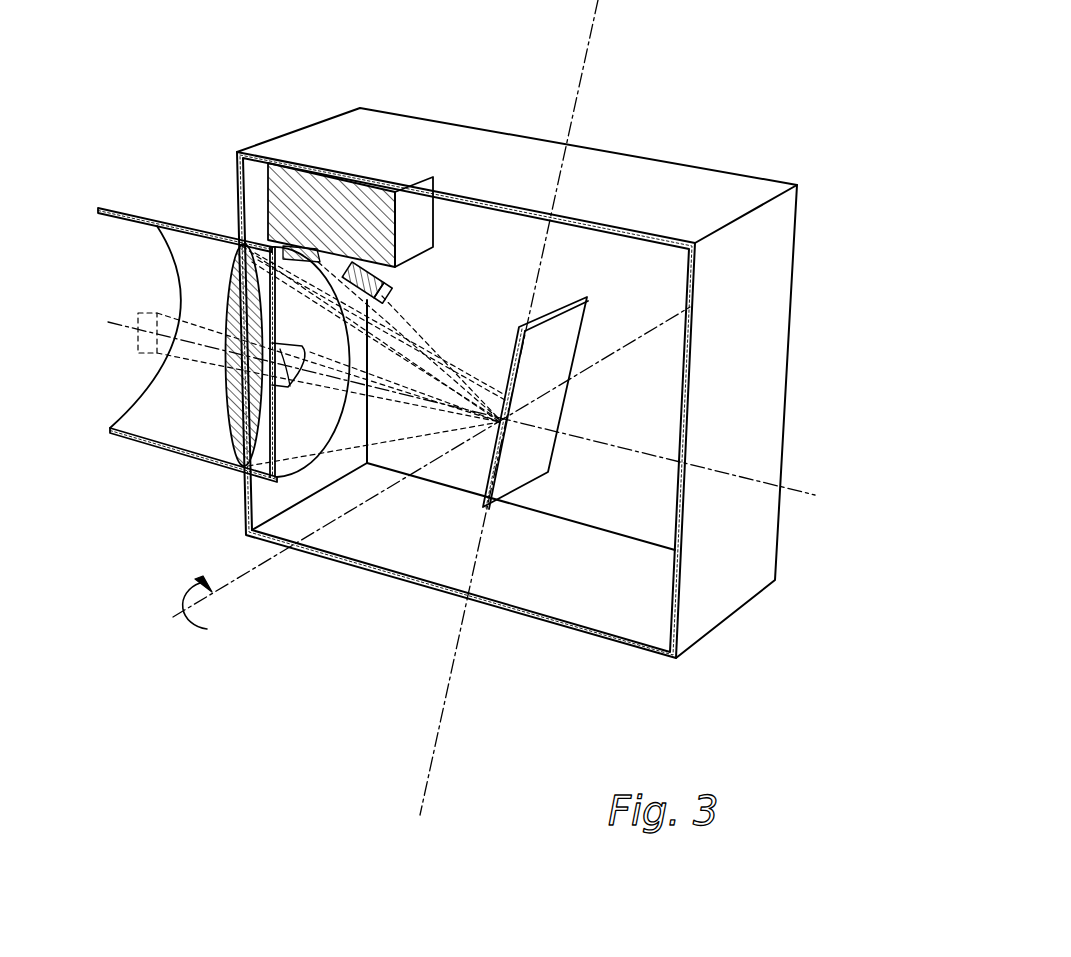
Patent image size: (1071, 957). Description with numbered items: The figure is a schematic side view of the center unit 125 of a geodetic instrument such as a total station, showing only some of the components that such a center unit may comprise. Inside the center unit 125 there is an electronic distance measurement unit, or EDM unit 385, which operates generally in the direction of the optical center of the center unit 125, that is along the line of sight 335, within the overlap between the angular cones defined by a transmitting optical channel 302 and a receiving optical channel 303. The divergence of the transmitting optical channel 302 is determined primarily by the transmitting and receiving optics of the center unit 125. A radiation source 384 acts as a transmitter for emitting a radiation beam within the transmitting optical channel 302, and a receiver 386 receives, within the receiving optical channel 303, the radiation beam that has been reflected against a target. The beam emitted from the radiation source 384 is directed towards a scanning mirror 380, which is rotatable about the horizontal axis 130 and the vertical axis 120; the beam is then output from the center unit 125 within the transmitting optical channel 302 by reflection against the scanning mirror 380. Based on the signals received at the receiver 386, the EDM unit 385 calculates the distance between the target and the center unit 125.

The vertical axis 120 is at (583, 82).
The center unit 125 is at (280, 101).
The horizontal axis 130 is at (223, 590).
The transmitting optical channel 302 is at (155, 322).
The receiving optical channel 303 is at (125, 208).
The line of sight 335 is at (790, 498).
The scanning mirror 380 is at (508, 478).
The radiation source 384 is at (240, 247).
The EDM unit 385 is at (418, 200).
The receiver 386 is at (393, 279).